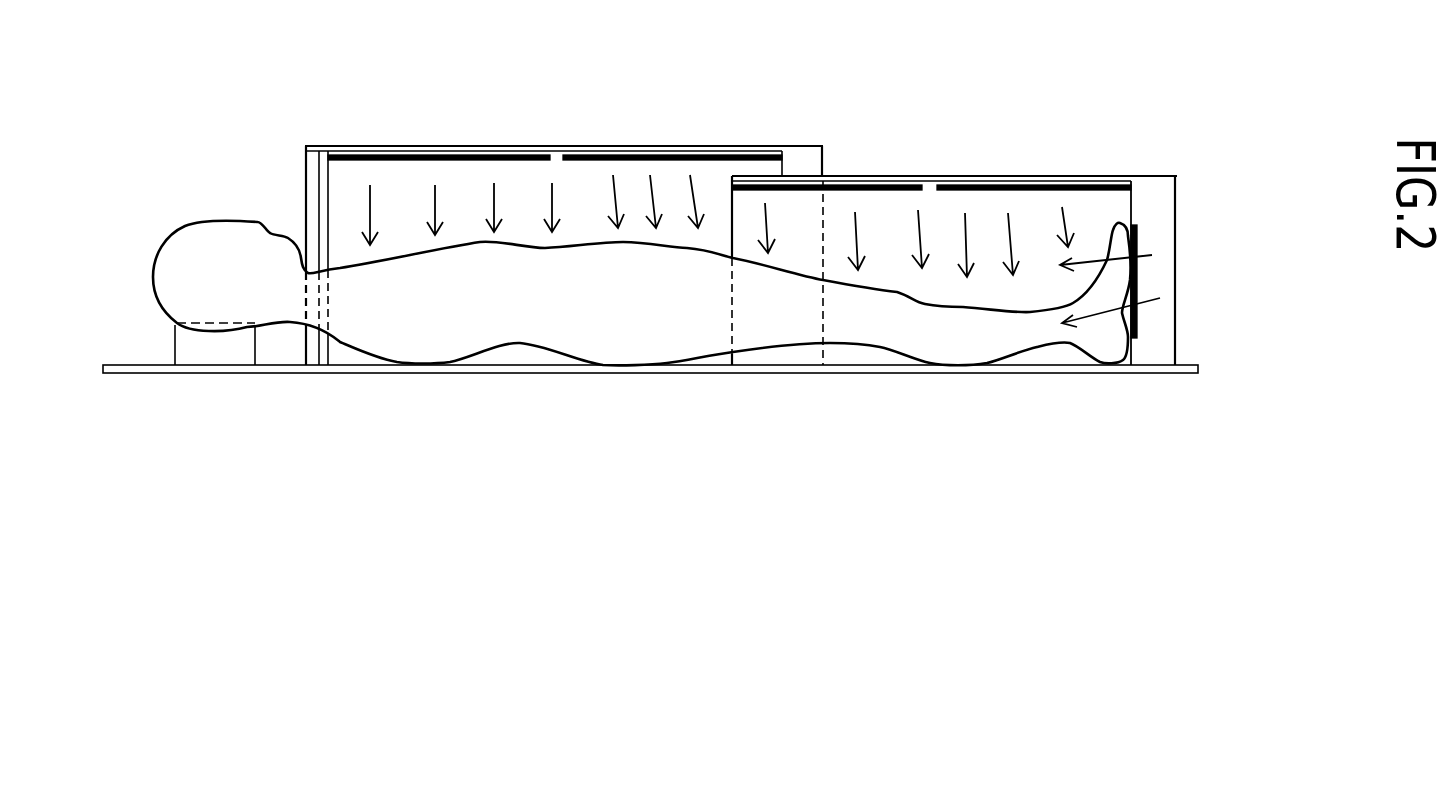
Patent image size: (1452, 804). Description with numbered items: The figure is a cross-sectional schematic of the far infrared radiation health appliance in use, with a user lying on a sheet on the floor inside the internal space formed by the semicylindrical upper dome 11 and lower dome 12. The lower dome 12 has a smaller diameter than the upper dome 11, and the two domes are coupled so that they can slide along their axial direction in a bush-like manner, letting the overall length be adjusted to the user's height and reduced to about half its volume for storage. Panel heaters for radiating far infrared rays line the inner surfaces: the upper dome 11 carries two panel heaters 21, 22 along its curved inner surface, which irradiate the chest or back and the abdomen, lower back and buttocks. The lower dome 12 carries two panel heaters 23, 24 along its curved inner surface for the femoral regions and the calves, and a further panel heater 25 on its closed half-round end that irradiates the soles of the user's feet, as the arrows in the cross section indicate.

The upper dome 11 is at (340, 144).
The lower dome 12 is at (1150, 175).
The panel heater 21 is at (465, 158).
The panel heater 22 is at (718, 158).
The panel heater 23 is at (871, 190).
The panel heater 24 is at (1018, 190).
The panel heater 25 is at (1137, 273).